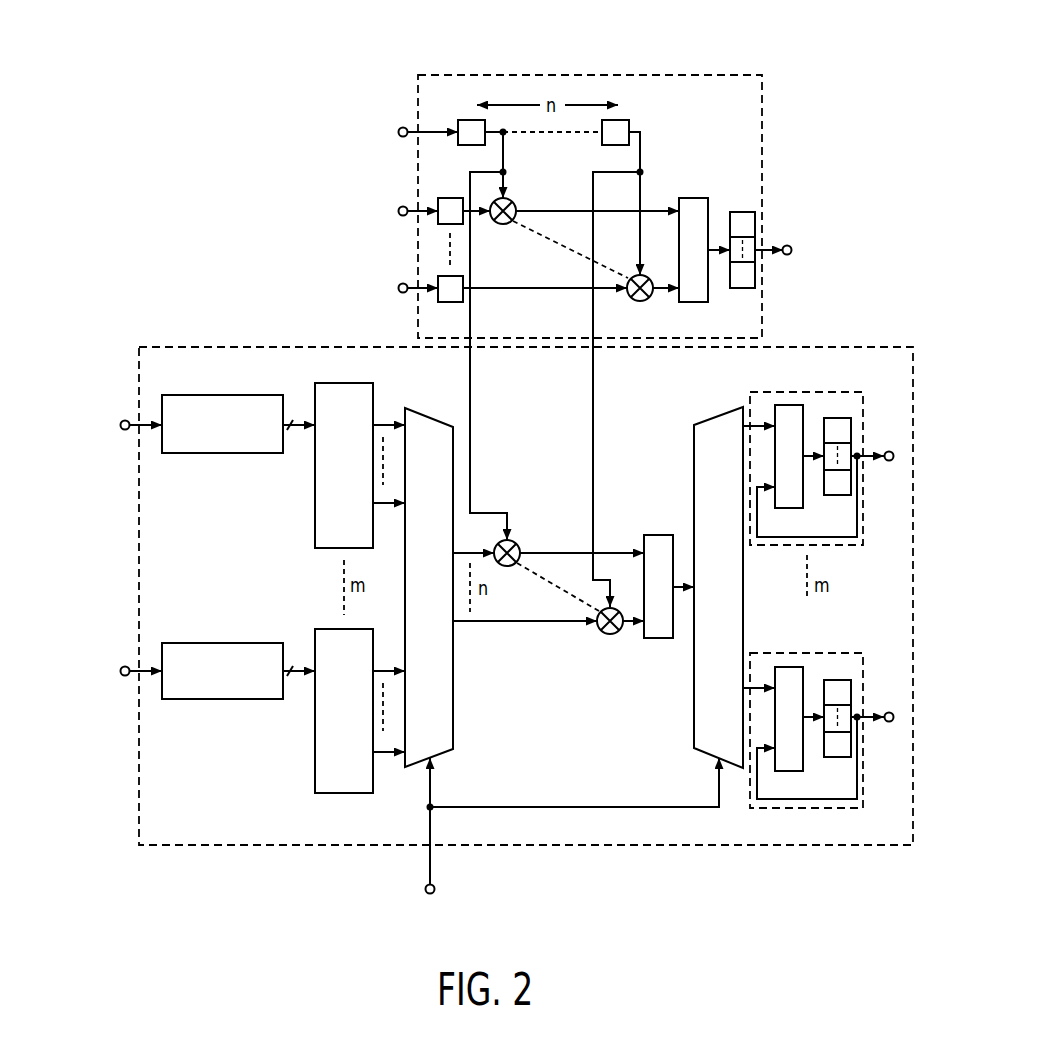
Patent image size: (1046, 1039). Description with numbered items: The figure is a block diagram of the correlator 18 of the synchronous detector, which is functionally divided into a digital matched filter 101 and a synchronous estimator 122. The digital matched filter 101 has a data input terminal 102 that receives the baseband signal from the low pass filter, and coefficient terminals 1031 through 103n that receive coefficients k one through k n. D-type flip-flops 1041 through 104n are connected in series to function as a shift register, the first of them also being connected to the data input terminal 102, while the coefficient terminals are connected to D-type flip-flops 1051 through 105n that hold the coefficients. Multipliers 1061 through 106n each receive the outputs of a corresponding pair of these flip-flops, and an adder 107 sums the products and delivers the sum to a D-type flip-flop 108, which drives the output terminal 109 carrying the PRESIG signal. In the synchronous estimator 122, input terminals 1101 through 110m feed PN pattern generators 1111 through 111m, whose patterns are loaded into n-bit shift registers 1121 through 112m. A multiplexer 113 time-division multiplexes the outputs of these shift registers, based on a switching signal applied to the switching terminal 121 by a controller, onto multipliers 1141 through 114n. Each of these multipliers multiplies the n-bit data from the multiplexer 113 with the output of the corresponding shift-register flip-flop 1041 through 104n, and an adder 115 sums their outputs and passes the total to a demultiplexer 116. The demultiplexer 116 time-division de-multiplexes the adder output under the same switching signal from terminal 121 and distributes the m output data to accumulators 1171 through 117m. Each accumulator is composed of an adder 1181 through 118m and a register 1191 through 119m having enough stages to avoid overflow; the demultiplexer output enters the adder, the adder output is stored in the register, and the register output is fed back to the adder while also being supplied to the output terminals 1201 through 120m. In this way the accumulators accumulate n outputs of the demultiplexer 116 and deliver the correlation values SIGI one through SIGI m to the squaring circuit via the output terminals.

The correlator 18 is at (836, 133).
The digital matched filter 101 is at (535, 75).
The data input terminal 102 is at (400, 128).
The coefficient terminal 1031 is at (400, 207).
The coefficient terminal 103n is at (400, 284).
The D-type flip-flop 1041 is at (462, 120).
The D-type flip-flop 104n is at (630, 122).
The D-type flip-flop 1051 is at (452, 198).
The D-type flip-flop 105n is at (465, 303).
The multiplier 1061 is at (513, 200).
The multiplier 106n is at (646, 300).
The adder 107 is at (690, 198).
The D-type flip-flop 108 is at (745, 212).
The output terminal 109 is at (791, 245).
The input terminal 1101 is at (121, 422).
The input terminal 110m is at (121, 668).
The PN pattern generator 1111 is at (208, 453).
The PN pattern generator 111m is at (208, 699).
The n-bit shift register 1121 is at (315, 508).
The n-bit shift register 112m is at (315, 756).
The multiplexer 113 is at (427, 413).
The multiplier 1141 is at (517, 545).
The multiplier 114n is at (614, 634).
The adder 115 is at (655, 535).
The demultiplexer 116 is at (694, 447).
The accumulator 1171 is at (750, 392).
The accumulator 117m is at (860, 653).
The adder 1181 is at (788, 405).
The adder 118m is at (788, 667).
The register 1191 is at (840, 418).
The register 119m is at (840, 680).
The output terminal 1201 is at (887, 452).
The output terminal 120m is at (887, 713).
The switching terminal 121 is at (433, 893).
The synchronous estimator 122 is at (548, 848).